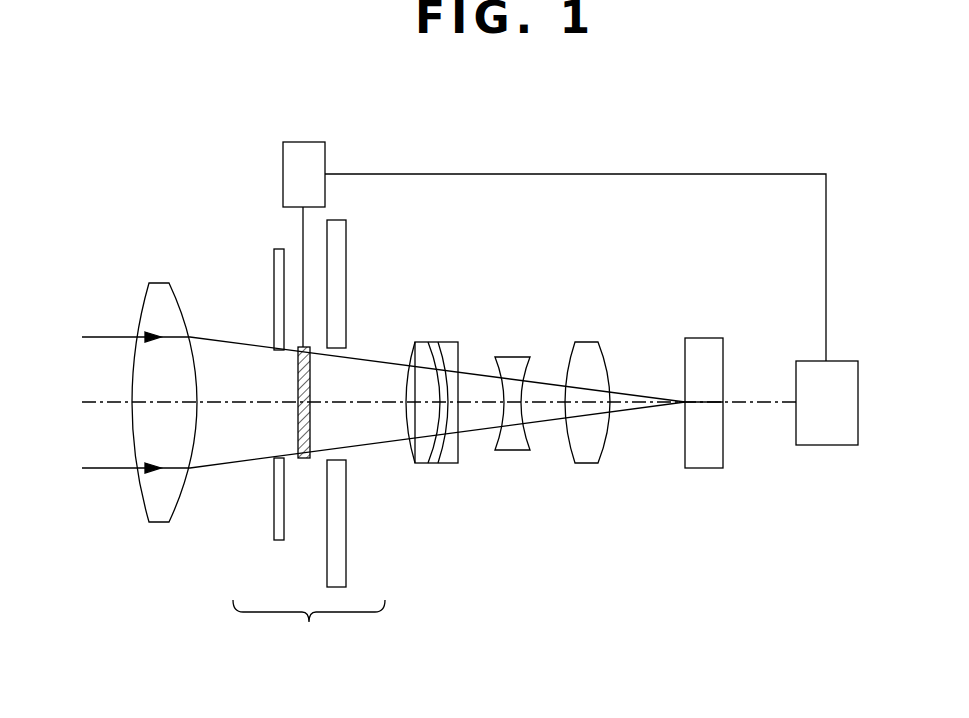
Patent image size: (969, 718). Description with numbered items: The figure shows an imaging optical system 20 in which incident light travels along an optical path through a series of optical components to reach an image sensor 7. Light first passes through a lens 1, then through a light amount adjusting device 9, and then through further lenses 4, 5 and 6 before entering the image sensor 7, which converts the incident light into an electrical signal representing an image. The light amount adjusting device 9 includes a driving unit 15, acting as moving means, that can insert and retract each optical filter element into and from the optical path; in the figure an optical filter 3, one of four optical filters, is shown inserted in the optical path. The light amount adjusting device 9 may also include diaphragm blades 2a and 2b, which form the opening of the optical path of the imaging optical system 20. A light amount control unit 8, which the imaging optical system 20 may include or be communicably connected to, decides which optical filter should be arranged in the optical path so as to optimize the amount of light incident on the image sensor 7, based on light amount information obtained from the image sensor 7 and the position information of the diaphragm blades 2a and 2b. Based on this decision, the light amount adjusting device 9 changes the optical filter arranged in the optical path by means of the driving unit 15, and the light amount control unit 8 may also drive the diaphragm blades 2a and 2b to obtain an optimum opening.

The lens 1 is at (146, 513).
The diaphragm blade 2a is at (273, 268).
The diaphragm blade 2b is at (273, 526).
The optical filter 3 is at (296, 430).
The lens 4 is at (429, 342).
The lens 5 is at (516, 357).
The lens 6 is at (586, 342).
The image sensor 7 is at (703, 470).
The light amount control unit 8 is at (826, 446).
The light amount adjusting device 9 is at (309, 438).
The driving unit 15 is at (304, 142).
The imaging optical system 20 is at (712, 112).